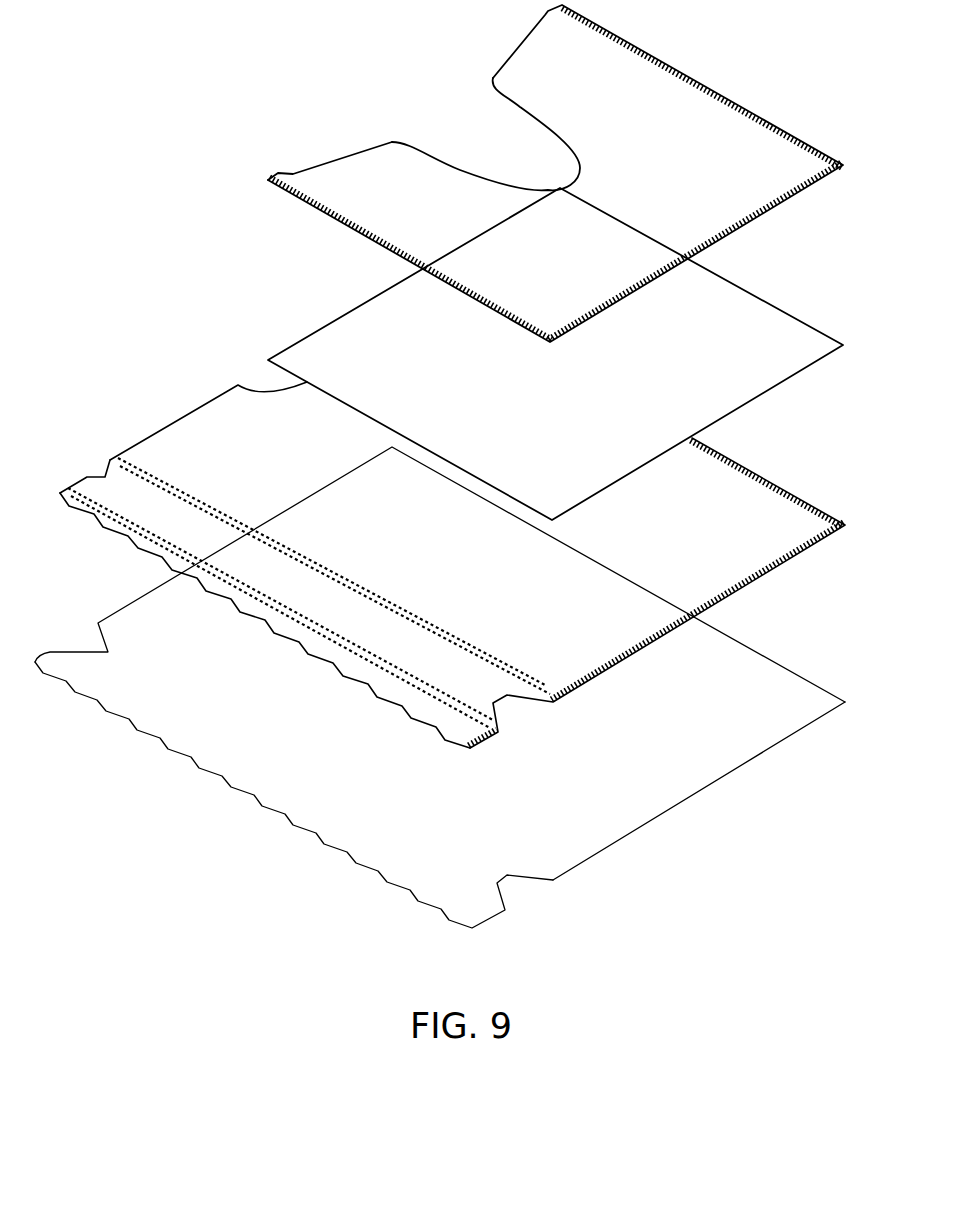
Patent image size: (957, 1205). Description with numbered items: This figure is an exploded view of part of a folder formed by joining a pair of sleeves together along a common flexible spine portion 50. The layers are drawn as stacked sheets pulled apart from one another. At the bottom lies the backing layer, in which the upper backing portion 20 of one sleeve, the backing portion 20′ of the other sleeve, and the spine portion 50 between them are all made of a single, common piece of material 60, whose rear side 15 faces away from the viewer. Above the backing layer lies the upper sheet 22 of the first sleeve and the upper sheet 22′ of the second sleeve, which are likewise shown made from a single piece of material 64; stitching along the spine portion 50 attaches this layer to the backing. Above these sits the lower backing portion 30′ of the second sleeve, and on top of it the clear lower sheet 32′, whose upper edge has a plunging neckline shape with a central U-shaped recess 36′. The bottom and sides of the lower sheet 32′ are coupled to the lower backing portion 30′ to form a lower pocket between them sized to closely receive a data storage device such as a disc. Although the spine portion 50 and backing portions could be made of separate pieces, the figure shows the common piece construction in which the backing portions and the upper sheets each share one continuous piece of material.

The lower sheet 32′ is at (728, 127).
The central U-shaped recess 36′ is at (514, 101).
The lower backing portion 30′ is at (768, 322).
The upper sheet 22′ is at (778, 508).
The single piece of material 64 is at (208, 407).
The spine portion 50 is at (107, 478).
The upper sheet 22 is at (70, 503).
The backing portion 20′ is at (783, 695).
The common piece of material 60 is at (698, 790).
The upper backing portion 20 is at (272, 808).
The rear side 15 is at (664, 864).